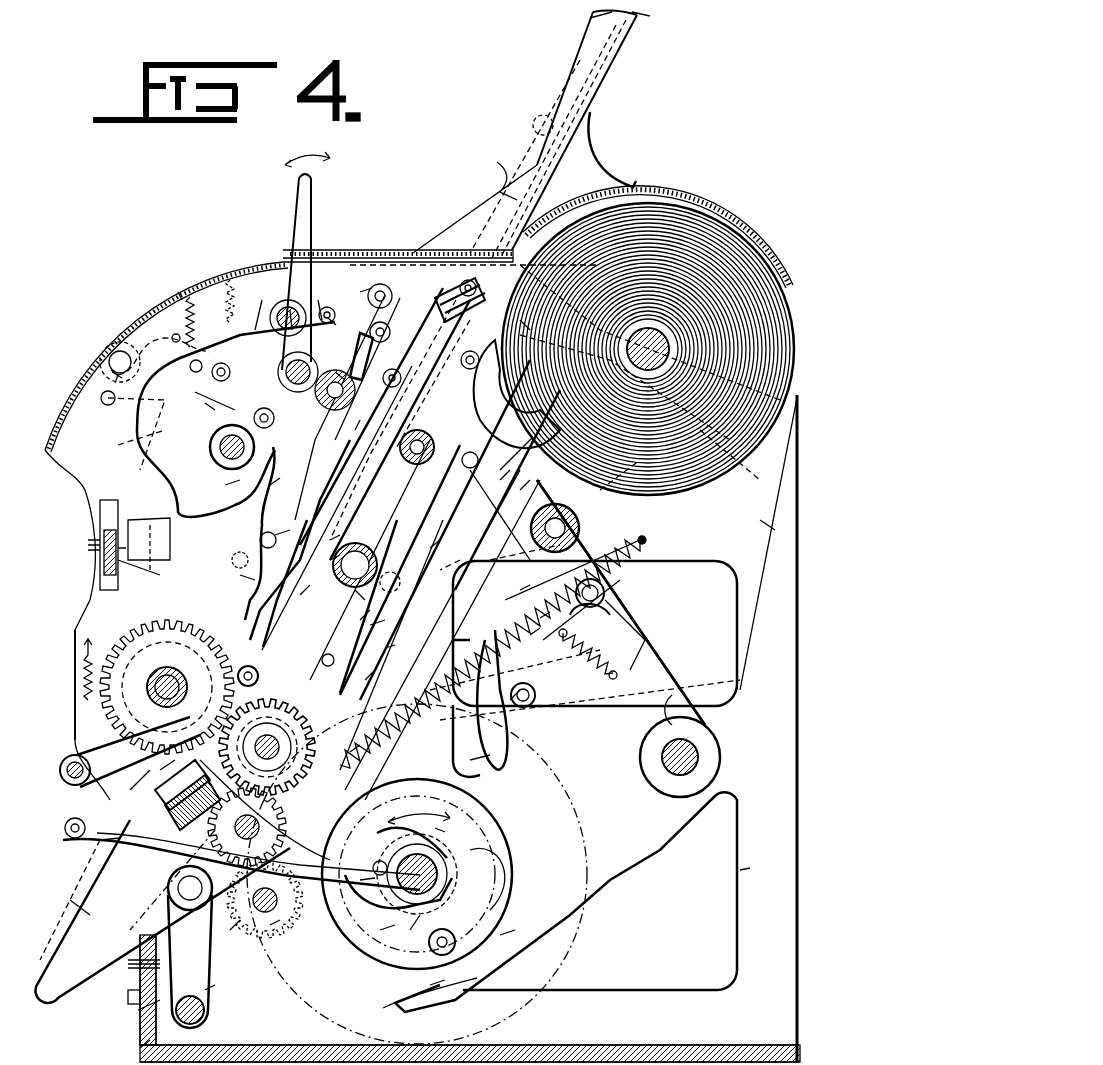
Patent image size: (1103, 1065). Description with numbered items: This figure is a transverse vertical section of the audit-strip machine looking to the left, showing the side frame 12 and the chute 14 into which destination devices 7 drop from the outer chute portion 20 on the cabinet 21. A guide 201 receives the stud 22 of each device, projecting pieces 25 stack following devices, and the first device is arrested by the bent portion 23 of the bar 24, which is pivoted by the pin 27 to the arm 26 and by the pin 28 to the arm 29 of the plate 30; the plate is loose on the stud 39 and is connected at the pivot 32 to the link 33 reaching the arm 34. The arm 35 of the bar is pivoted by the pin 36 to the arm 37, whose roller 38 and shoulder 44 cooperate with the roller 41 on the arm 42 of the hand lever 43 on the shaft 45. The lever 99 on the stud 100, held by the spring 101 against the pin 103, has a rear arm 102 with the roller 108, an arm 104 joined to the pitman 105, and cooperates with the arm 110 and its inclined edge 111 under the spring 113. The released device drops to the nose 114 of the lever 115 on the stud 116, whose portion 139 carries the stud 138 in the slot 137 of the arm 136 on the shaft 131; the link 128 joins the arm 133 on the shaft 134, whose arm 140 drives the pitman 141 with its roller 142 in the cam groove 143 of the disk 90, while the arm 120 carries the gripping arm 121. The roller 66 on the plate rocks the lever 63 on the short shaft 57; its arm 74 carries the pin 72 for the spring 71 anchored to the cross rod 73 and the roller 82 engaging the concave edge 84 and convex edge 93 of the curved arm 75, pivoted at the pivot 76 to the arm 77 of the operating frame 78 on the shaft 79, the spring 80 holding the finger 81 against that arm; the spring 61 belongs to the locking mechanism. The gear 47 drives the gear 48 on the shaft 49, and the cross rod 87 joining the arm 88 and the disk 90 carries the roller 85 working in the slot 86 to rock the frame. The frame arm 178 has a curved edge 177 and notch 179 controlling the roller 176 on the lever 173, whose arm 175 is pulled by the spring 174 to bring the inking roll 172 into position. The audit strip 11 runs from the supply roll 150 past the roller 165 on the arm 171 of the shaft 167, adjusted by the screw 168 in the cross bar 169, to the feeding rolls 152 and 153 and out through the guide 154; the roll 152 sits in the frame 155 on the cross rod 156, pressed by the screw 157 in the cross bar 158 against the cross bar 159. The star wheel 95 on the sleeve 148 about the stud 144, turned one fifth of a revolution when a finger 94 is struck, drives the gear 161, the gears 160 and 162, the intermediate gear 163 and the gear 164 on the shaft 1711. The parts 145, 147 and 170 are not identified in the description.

The section line 7 is at (612, 12).
The section line 201 is at (632, 12).
The arm 20 is at (597, 110).
The pivot 22 is at (543, 122).
The flange 25 is at (497, 180).
The lever 43 is at (305, 192).
The link 136 is at (320, 310).
The link 137 is at (330, 318).
The roller 37 is at (300, 305).
The arm 36 is at (365, 290).
The pivot 35 is at (385, 290).
The spring 101 is at (178, 300).
The housing 21 is at (180, 290).
The spring 113 is at (233, 285).
The lever 110 is at (252, 300).
The pin 45 is at (290, 310).
The pin 147 is at (452, 283).
The pin 103 is at (172, 336).
The pivot 100 is at (118, 350).
The lever 99 is at (105, 370).
The arrow 104 is at (112, 372).
The pin 111 is at (226, 366).
The pin 138 is at (333, 318).
The link 116 is at (335, 372).
The pin 128 is at (384, 338).
The roller 139 is at (312, 350).
The roller 131 is at (315, 390).
The arm 102 is at (200, 396).
The arm 108 is at (210, 405).
The pin 42 is at (254, 420).
The roller 41 is at (210, 447).
The shaft 167 is at (226, 455).
The arm 44 is at (230, 485).
The lever 115 is at (275, 480).
The pin 105 is at (112, 440).
The bracket 168 is at (145, 520).
The slot 170 is at (155, 540).
The bracket 169 is at (100, 570).
The arm 171 is at (150, 578).
The lever 38 is at (275, 535).
The pin 114 is at (262, 540).
The pin 121 is at (235, 560).
The arm 145 is at (240, 575).
The gear 95 is at (170, 628).
The spring 165 is at (150, 640).
The hub 148 is at (145, 680).
The plate 94 is at (110, 700).
The shaft 144 is at (160, 700).
The pivot 134 is at (62, 772).
The link 133 is at (130, 790).
The pivot 140 is at (65, 828).
The lever 141 is at (110, 840).
The lever 14 is at (75, 905).
The pawl 161 is at (160, 770).
The shaft 162 is at (258, 760).
The gear 163 is at (275, 838).
The gear 153 is at (285, 925).
The pin 160 is at (262, 700).
The arm 27 is at (300, 595).
The arm 26 is at (360, 620).
The rod 34 is at (365, 680).
The lever 28 is at (356, 432).
The pin 29 is at (386, 390).
The lever 23 is at (330, 540).
The lever 24 is at (330, 560).
The roller 30 is at (420, 468).
The link 32 is at (500, 480).
The pin 39 is at (470, 370).
The cam 61 is at (533, 437).
The link 63 is at (520, 490).
The link 33 is at (430, 548).
The nut 172 is at (378, 562).
The washer 176 is at (400, 585).
The arm 173 is at (360, 598).
The arm 177 is at (375, 625).
The arm 179 is at (390, 648).
The spring 174 is at (405, 652).
The pin 178 is at (333, 662).
The spring end 175 is at (355, 752).
The arm 93 is at (470, 760).
The lever 75 is at (496, 762).
The arrow 143 is at (440, 826).
The lever 48 is at (585, 897).
The cam 49 is at (440, 868).
The cam 142 is at (362, 882).
The arm 90 is at (380, 930).
The arm 88 is at (410, 932).
The arm 86 is at (430, 986).
The roller 87 is at (457, 944).
The arm 85 is at (500, 935).
The plate 12 is at (740, 870).
The roller 79 is at (700, 757).
The arm 78 is at (674, 694).
The lever 47 is at (650, 660).
The arm 77 is at (645, 640).
The spring 80 is at (600, 665).
The link 81 is at (600, 625).
The pivot 76 is at (605, 593).
The pin 73 is at (647, 541).
The spring 71 is at (600, 575).
The roller 57 is at (578, 522).
The frame 11 is at (768, 530).
The spool 150 is at (770, 300).
The block 66 is at (515, 320).
The arm 72 is at (520, 590).
The arm 74 is at (540, 618).
The lever 120 is at (530, 635).
The pivot 82 is at (535, 700).
The arm 84 is at (512, 712).
The link 152 is at (178, 908).
The screw 159 is at (160, 958).
The screw 157 is at (128, 978).
The bracket 154 is at (138, 1010).
The base 158 is at (140, 1048).
The link 155 is at (205, 990).
The pivot 156 is at (205, 1010).
The arm 1711 is at (235, 932).
The pawl 164 is at (275, 927).